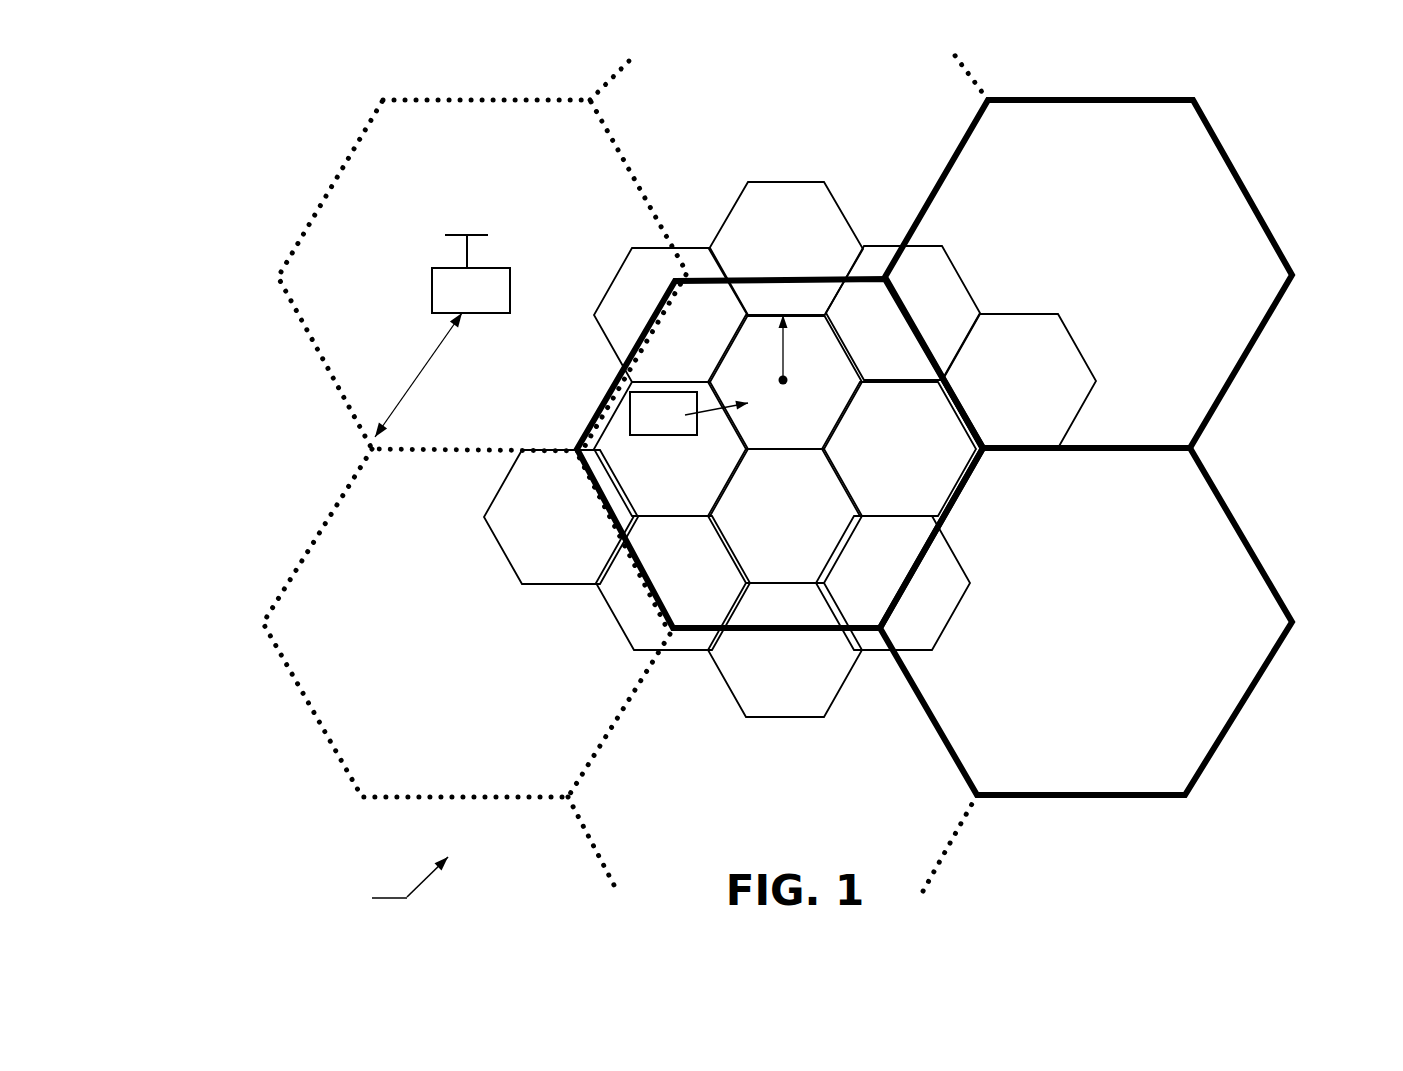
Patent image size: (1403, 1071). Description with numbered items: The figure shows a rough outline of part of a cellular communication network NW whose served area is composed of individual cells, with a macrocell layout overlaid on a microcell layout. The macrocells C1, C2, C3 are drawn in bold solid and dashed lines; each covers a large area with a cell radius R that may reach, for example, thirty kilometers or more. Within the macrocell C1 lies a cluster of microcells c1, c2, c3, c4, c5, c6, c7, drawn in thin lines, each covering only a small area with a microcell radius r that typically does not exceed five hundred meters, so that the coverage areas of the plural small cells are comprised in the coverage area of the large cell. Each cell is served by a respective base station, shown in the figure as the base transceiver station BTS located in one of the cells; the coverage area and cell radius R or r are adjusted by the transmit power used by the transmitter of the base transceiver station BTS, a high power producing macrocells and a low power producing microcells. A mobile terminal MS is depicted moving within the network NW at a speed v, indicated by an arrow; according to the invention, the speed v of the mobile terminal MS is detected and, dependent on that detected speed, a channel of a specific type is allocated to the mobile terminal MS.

The microcell c1 is at (785, 382).
The microcell c2 is at (671, 449).
The microcell c3 is at (785, 516).
The microcell c4 is at (899, 449).
The microcell c5 is at (903, 313).
The microcell c6 is at (786, 249).
The microcell c7 is at (671, 315).
The macrocell C1 is at (760, 632).
The macrocell C2 is at (1088, 274).
The macrocell C3 is at (1086, 621).
The base transceiver station BTS is at (471, 274).
The mobile terminal MS is at (663, 413).
The cell radius R is at (418, 375).
The cell radius r is at (794, 350).
The speed v is at (716, 396).
The cellular communication network NW is at (405, 877).